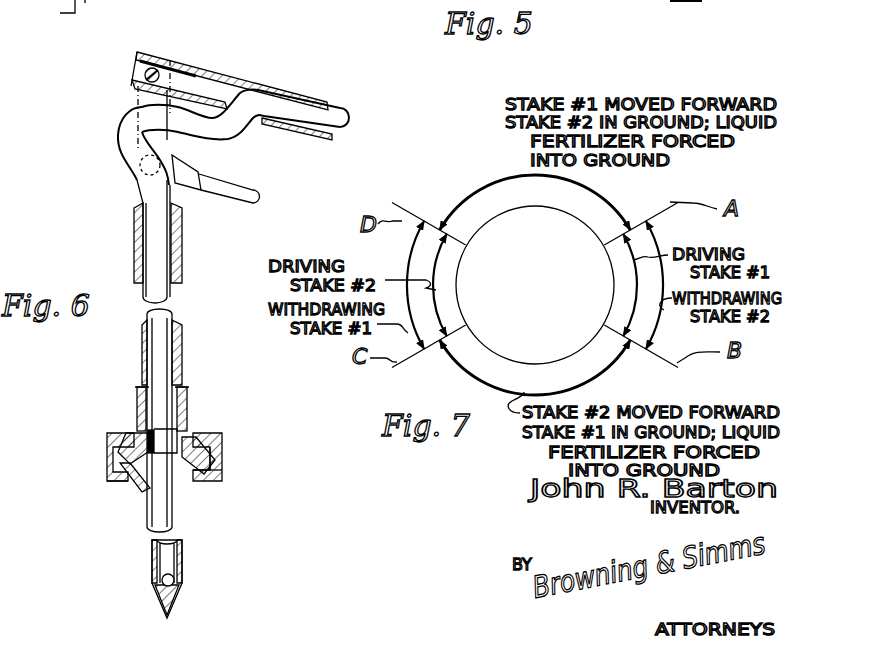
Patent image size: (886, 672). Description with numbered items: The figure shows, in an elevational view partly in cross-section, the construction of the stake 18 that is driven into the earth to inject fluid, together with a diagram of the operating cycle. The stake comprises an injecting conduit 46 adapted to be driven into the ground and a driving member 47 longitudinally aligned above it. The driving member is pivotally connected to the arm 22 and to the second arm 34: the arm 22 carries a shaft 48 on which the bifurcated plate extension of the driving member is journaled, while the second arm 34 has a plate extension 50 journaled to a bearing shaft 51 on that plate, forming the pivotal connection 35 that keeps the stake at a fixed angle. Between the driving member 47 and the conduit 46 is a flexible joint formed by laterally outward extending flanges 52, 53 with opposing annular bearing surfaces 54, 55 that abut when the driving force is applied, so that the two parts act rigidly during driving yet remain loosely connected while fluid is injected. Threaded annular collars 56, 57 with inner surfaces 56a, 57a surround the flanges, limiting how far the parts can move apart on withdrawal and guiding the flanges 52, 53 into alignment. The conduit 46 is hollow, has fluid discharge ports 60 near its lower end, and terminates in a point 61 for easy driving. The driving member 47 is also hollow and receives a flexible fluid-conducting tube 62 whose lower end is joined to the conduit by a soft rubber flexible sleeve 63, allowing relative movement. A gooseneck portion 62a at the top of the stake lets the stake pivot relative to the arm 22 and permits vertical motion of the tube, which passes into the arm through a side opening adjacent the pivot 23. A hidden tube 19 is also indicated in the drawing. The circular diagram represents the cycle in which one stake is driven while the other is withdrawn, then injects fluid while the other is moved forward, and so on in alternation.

The stake 18 is at (122, 371).
The vertical tube 19 is at (140, 102).
The arm 22 is at (308, 94).
The pivot 23 is at (175, 52).
The second arm 34 is at (245, 185).
The pivotal connection 35 is at (122, 163).
The injecting conduit 46 is at (150, 548).
The driving member 47 is at (143, 340).
The shaft 48 is at (140, 54).
The plate extension 50 is at (182, 155).
The bearing shaft 51 is at (142, 175).
The flange 52 is at (218, 443).
The flange 53 is at (190, 482).
The annular bearing surface 54 is at (214, 448).
The annular bearing surface 55 is at (214, 470).
The annular collar 56 is at (108, 428).
The inner surface 56a is at (132, 434).
The annular collar 57 is at (110, 484).
The inner surface 57a is at (134, 485).
The fluid discharge port 60 is at (177, 575).
The point 61 is at (176, 598).
The flexible fluid-conducting tube 62 is at (162, 231).
The gooseneck portion 62a is at (140, 133).
The flexible sleeve 63 is at (190, 418).